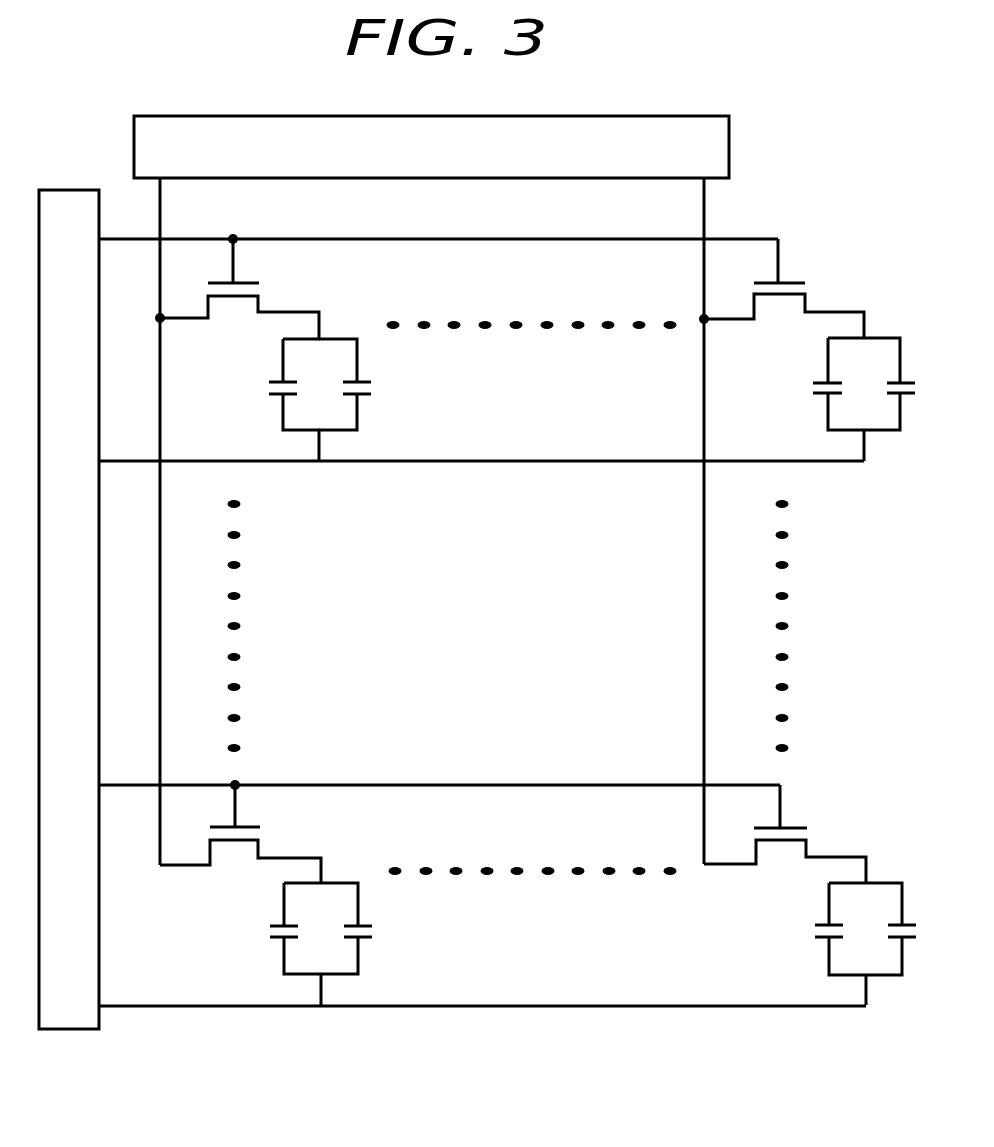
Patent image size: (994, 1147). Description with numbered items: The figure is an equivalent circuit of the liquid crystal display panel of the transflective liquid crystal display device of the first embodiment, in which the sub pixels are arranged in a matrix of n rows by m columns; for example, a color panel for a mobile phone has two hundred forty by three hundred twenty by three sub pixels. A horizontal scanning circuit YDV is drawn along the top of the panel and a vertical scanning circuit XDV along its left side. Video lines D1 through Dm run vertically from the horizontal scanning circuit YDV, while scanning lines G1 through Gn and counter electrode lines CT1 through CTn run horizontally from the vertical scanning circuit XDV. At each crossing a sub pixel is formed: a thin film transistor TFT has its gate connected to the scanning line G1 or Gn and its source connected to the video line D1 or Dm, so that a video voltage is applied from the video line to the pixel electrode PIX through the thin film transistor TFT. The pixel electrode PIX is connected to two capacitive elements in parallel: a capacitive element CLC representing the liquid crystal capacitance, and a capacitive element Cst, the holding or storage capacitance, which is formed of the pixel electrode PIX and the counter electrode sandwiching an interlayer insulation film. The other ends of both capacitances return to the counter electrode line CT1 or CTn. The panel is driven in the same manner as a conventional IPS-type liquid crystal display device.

The horizontal scanning circuit YDV is at (431, 147).
The vertical scanning circuit XDV is at (69, 609).
The scanning line G1 is at (438, 227).
The scanning line Gn is at (439, 772).
The video line D1 is at (178, 521).
The video line Dm is at (728, 521).
The counter electrode line CT1 is at (481, 445).
The counter electrode line CTn is at (482, 986).
The thin film transistor TFT is at (243, 289).
The pixel electrode PIX is at (288, 350).
The liquid crystal capacitance CLC is at (276, 384).
The holding capacitance Cst is at (368, 384).